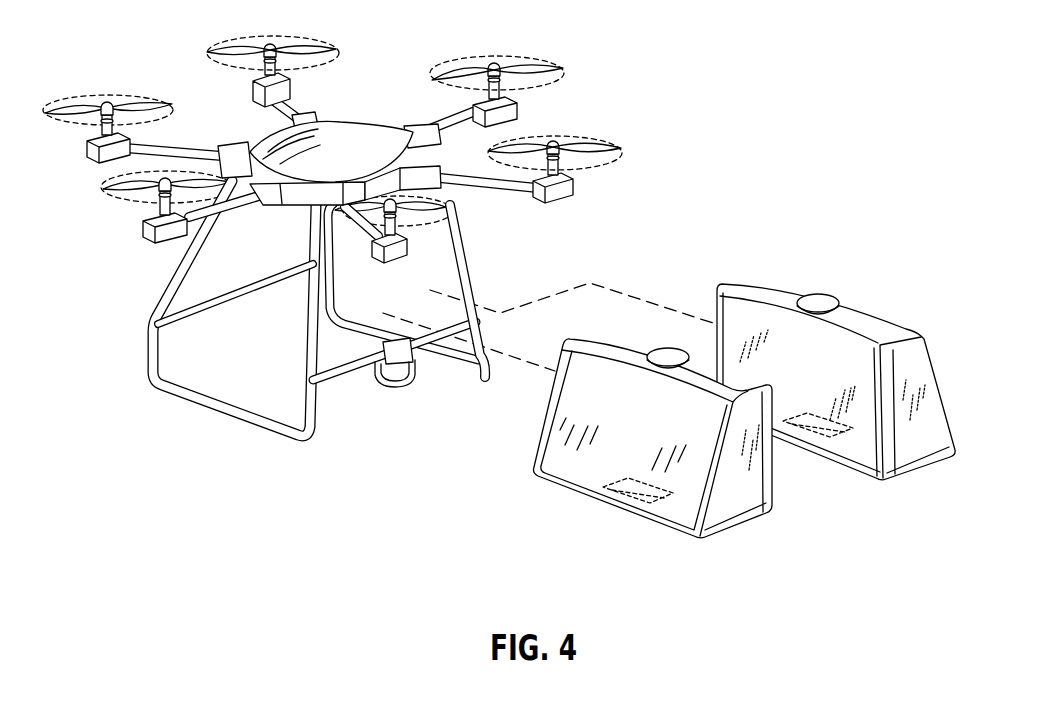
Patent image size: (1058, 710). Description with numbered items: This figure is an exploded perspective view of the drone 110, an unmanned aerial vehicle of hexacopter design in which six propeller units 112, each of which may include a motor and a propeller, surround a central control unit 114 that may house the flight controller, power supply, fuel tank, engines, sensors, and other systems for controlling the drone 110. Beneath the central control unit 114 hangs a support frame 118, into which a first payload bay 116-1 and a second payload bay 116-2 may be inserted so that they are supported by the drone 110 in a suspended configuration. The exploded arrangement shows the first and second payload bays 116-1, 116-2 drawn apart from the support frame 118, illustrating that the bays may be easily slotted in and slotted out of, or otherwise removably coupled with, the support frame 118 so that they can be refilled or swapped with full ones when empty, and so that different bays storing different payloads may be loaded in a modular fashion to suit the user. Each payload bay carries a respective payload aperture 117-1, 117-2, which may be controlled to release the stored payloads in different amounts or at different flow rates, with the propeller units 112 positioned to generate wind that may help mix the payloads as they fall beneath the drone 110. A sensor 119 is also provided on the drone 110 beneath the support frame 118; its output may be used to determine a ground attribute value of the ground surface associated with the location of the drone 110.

The drone 110 is at (406, 257).
The propeller units 112 is at (518, 109).
The central control unit 114 is at (340, 133).
The first payload bay 116-1 is at (740, 511).
The second payload bay 116-2 is at (907, 451).
The payload aperture 117-1 is at (626, 496).
The payload aperture 117-2 is at (837, 434).
The support frame 118 is at (343, 373).
The sensor 119 is at (407, 386).